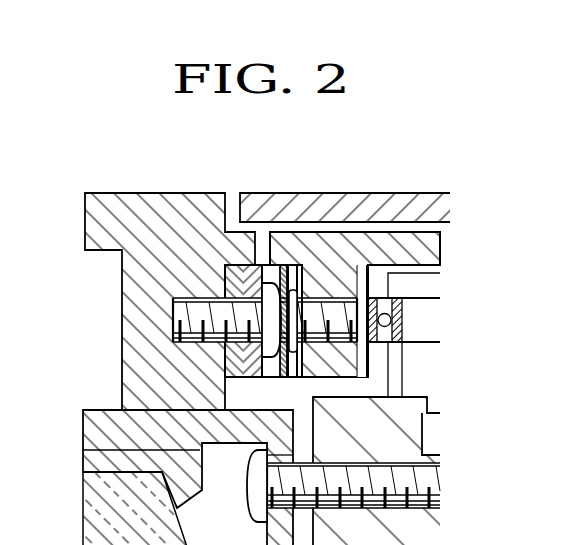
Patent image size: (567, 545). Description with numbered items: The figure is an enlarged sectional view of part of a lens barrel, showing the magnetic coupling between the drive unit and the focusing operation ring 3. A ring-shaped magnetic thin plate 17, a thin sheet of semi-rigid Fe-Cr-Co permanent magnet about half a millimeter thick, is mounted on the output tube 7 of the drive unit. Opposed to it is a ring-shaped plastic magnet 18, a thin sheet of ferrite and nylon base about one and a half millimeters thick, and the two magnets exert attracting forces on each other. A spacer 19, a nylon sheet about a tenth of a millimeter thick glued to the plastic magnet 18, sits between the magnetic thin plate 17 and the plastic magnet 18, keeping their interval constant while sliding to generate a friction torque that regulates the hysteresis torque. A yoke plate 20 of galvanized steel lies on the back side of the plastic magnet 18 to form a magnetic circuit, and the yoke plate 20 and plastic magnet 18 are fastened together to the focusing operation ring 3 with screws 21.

The focusing operation ring 3 is at (140, 388).
The output tube 7 is at (343, 250).
The magnetic thin plate 17 is at (293, 266).
The plastic magnet 18 is at (247, 267).
The spacer 19 is at (283, 265).
The yoke plate 20 is at (222, 285).
The screws 21 is at (172, 322).